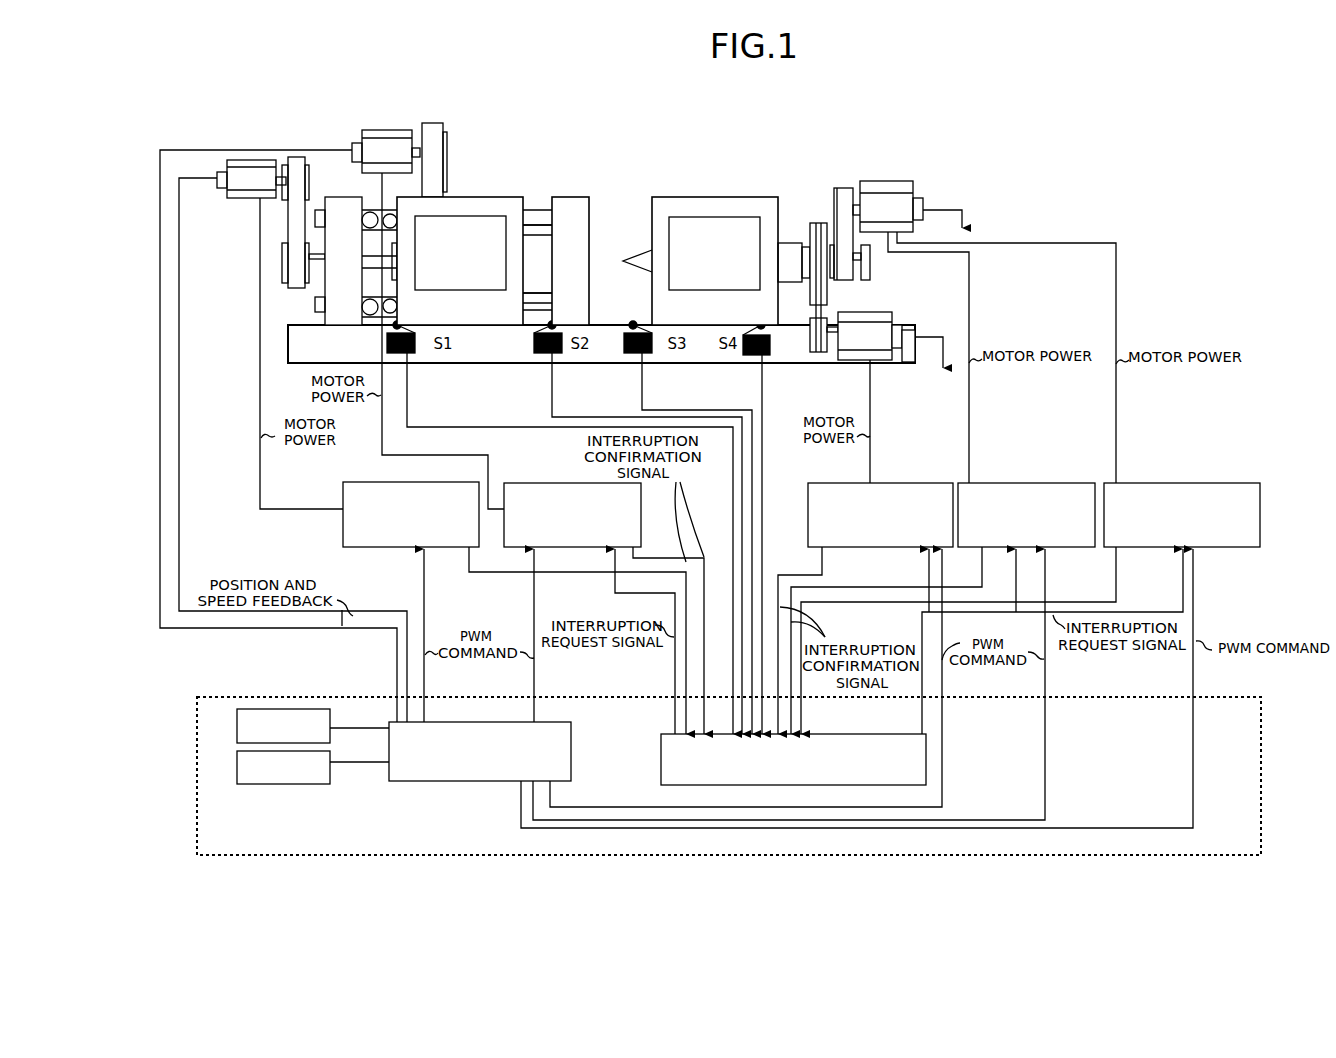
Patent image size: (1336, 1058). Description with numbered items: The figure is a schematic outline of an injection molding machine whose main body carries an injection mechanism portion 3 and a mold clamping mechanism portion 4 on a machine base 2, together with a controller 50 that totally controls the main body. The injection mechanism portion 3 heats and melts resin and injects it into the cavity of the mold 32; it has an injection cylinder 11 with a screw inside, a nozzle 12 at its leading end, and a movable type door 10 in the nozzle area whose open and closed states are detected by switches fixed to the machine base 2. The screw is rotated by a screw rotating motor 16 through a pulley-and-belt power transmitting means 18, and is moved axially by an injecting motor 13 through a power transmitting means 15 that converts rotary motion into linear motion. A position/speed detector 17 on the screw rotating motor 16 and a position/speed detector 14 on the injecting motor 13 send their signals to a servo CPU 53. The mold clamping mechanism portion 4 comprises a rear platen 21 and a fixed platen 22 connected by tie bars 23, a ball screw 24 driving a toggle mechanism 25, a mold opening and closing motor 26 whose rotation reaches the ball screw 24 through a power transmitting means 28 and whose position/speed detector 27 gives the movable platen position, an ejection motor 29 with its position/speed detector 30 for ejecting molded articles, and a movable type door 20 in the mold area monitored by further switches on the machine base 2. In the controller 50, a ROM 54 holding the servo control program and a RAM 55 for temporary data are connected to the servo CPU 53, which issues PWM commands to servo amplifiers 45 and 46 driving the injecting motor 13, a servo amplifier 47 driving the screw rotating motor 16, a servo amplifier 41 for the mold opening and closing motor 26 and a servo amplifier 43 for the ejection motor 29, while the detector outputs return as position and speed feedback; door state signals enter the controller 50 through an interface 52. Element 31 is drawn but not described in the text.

The machine base 2 is at (490, 367).
The injection mechanism portion 3 is at (722, 122).
The mold clamping mechanism portion 4 is at (498, 125).
The movable type door 10 is at (697, 208).
The injection cylinder 11 is at (790, 255).
The nozzle 12 is at (623, 261).
The injecting motor 13 is at (915, 185).
The position/speed detector 14 is at (925, 202).
The power transmitting means 15 is at (842, 233).
The screw rotating motor 16 is at (885, 310).
The position/speed detector 17 is at (895, 323).
The power transmitting means 18 is at (825, 310).
The movable type door 20 is at (459, 205).
The rear platen 21 is at (328, 280).
The fixed platen 22 is at (571, 198).
The tie bars 23 is at (533, 218).
The ball screw 24 is at (370, 262).
The toggle mechanism 25 is at (390, 220).
The mold opening and closing motor 26 is at (238, 200).
The position/speed detector 27 is at (217, 175).
The power transmitting means 28 is at (298, 213).
The ejection motor 29 is at (360, 133).
The position/speed detector 30 is at (353, 145).
The pulley 31 is at (437, 183).
The mold 32 is at (538, 230).
The servo amplifier 41 is at (392, 480).
The servo amplifier 43 is at (560, 482).
The servo amplifier 45 is at (1020, 482).
The servo amplifier 46 is at (1165, 482).
The servo amplifier 47 is at (898, 482).
The controller 50 is at (615, 856).
The interface 52 is at (660, 745).
The servo CPU 53 is at (427, 782).
The ROM 54 is at (237, 732).
The RAM 55 is at (237, 762).